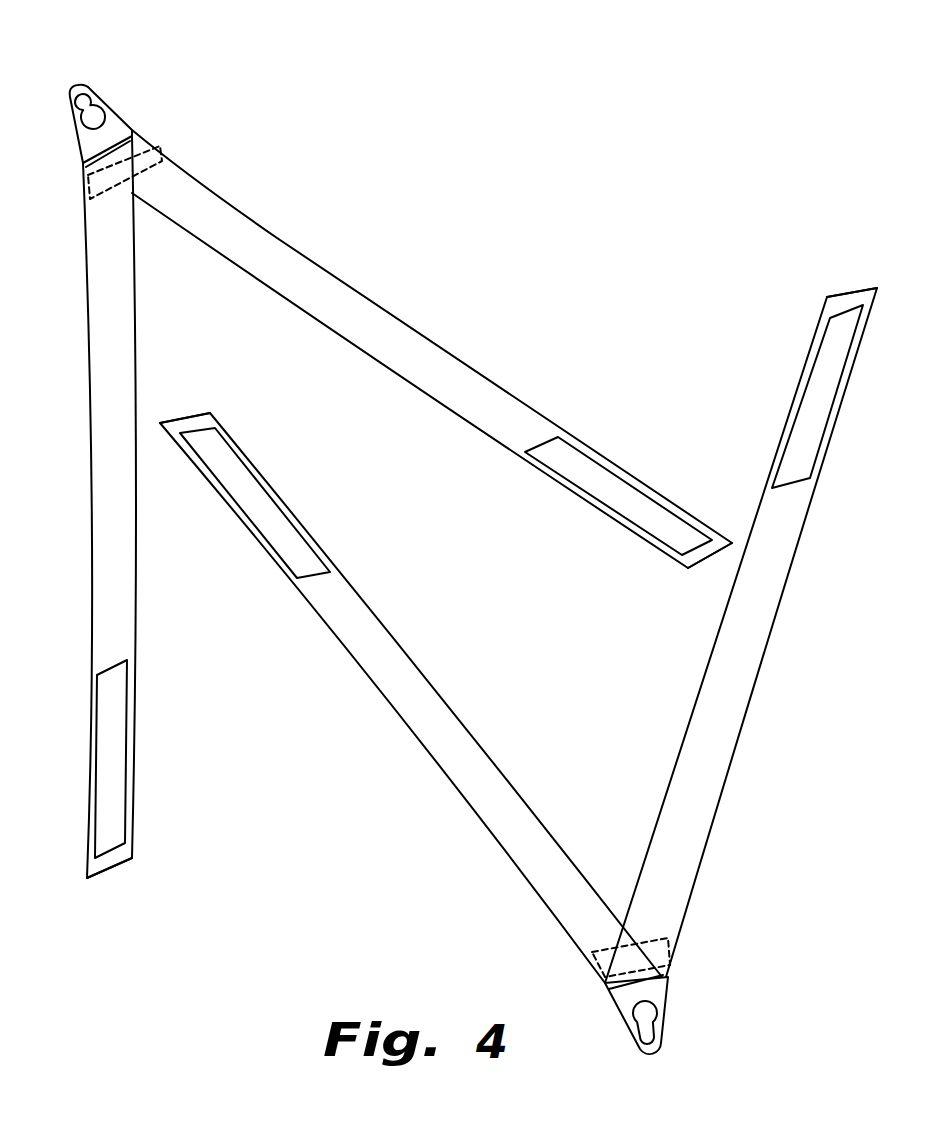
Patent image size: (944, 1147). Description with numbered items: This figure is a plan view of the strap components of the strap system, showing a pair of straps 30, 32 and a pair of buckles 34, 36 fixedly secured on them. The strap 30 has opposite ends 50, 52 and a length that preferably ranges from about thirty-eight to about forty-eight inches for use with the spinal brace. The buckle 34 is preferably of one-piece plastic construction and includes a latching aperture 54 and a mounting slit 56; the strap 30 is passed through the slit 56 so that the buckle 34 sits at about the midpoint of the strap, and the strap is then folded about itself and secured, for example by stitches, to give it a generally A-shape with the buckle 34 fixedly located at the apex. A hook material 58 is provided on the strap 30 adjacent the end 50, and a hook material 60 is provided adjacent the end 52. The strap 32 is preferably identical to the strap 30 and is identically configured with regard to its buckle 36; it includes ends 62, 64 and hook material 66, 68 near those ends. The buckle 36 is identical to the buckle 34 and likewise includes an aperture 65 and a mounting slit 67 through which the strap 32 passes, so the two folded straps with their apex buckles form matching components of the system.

The strap 30 is at (305, 272).
The strap 32 is at (715, 718).
The buckle 34 is at (132, 130).
The buckle 36 is at (657, 990).
The end 50 is at (112, 858).
The end 52 is at (703, 557).
The latching aperture 54 is at (79, 88).
The mounting slit 56 is at (147, 162).
The hook material 58 is at (117, 775).
The hook material 60 is at (612, 490).
The end 62 is at (190, 419).
The end 64 is at (843, 302).
The aperture 65 is at (648, 1017).
The hook material 66 is at (262, 502).
The mounting slit 67 is at (670, 968).
The hook material 68 is at (815, 408).